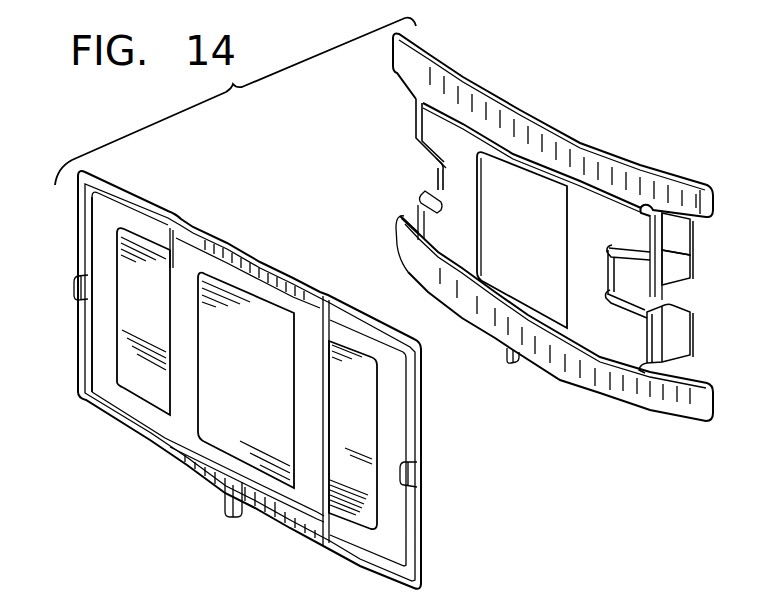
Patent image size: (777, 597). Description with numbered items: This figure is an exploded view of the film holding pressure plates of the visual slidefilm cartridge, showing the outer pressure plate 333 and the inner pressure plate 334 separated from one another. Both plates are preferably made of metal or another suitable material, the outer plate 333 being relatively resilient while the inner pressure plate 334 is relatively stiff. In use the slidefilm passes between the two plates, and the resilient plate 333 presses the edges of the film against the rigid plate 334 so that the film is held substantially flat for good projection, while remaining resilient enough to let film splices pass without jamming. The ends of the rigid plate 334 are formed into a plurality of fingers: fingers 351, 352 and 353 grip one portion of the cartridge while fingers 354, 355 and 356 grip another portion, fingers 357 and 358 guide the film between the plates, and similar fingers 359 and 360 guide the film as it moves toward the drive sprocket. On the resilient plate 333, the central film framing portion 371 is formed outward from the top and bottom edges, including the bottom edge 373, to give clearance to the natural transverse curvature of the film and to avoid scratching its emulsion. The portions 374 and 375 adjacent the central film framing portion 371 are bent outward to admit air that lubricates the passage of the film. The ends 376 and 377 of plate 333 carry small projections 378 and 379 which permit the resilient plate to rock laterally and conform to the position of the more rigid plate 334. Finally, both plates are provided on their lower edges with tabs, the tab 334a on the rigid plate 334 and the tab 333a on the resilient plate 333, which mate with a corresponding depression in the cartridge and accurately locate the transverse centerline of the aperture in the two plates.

The outer pressure plate 333 is at (253, 205).
The tab 333a is at (233, 512).
The inner pressure plate 334 is at (598, 133).
The tab 334a is at (509, 357).
The finger 351 is at (677, 240).
The finger 352 is at (680, 272).
The finger 353 is at (680, 327).
The finger 354 is at (419, 98).
The finger 355 is at (442, 167).
The finger 356 is at (427, 193).
The finger 357 is at (412, 52).
The finger 358 is at (403, 219).
The finger 359 is at (690, 193).
The finger 360 is at (688, 396).
The central film framing portion 371 is at (185, 412).
The bottom edge 373 is at (293, 523).
The portion adjacent central film framing portion 374 is at (364, 428).
The portion adjacent central film framing portion 375 is at (127, 337).
The end of pressure plate 376 is at (408, 516).
The end of pressure plate 377 is at (82, 223).
The projection 378 is at (420, 474).
The projection 379 is at (77, 288).